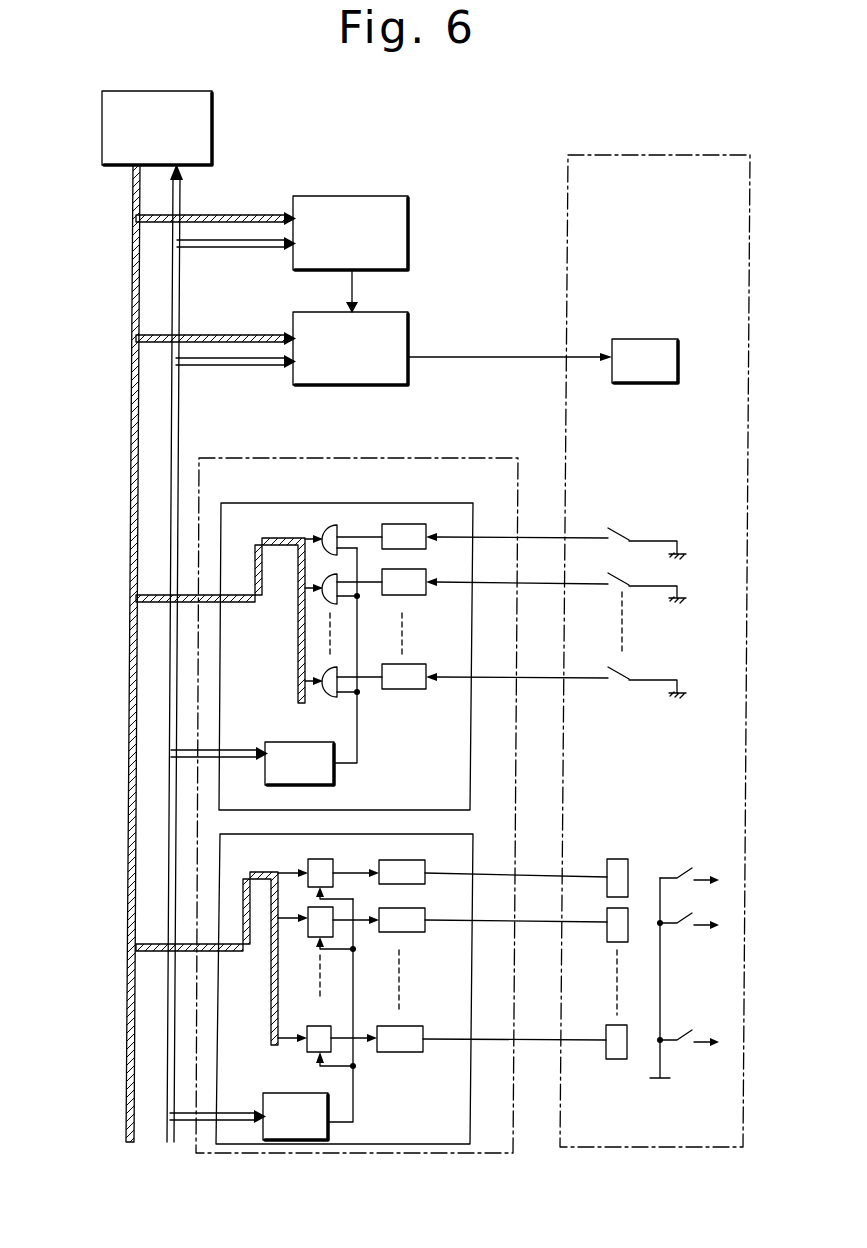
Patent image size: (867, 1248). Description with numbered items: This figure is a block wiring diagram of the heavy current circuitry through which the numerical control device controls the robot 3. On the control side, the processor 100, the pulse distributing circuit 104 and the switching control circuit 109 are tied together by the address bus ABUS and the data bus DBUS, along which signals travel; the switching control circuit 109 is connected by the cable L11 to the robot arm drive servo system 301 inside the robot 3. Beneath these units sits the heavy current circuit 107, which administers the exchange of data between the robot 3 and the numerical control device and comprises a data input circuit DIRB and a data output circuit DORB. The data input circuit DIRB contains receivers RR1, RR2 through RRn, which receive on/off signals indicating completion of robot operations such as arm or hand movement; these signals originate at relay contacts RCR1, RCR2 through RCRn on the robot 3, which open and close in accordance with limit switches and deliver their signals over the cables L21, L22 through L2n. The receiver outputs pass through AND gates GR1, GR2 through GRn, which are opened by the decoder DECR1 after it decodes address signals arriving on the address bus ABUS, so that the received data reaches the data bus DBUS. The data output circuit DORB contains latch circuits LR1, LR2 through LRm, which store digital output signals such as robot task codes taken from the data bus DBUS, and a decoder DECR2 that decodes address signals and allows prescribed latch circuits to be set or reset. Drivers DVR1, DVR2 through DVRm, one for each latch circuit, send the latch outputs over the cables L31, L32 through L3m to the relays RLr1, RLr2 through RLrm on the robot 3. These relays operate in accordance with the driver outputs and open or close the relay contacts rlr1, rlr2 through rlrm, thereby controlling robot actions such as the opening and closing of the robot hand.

The processor 100 is at (214, 146).
The Z-axis pulse distributing circuit 104 is at (404, 197).
The switching control circuit 109 is at (402, 312).
The heavy current circuit 107 is at (494, 458).
The robot 3 is at (647, 157).
The robot arm Z-axis drive servo system 301 is at (637, 340).
The cable L11 is at (494, 357).
The data bus DBUS is at (125, 1025).
The address bus ABUS is at (167, 1065).
The data input circuit DIRB is at (437, 503).
The data output circuit DORB is at (440, 833).
The AND gate GR1 is at (324, 530).
The AND gate GR2 is at (322, 598).
The AND gate GRn is at (327, 697).
The receiver RR1 is at (408, 524).
The receiver RR2 is at (407, 569).
The receiver RRn is at (407, 664).
The cable L21 is at (527, 538).
The cable L22 is at (527, 584).
The cable L2n is at (527, 678).
The relay contact RCR1 is at (647, 529).
The relay contact RCR2 is at (647, 580).
The relay contact RCRn is at (647, 676).
The decoder DECR1 is at (336, 781).
The decoder DECR2 is at (330, 1128).
The latch circuit LR1 is at (318, 859).
The latch circuit LR2 is at (308, 938).
The latch circuit LRm is at (313, 1031).
The driver DVR1 is at (393, 861).
The driver DVR2 is at (392, 908).
The driver DVRm is at (414, 1026).
The cable L31 is at (525, 877).
The cable L32 is at (525, 922).
The cable L3m is at (525, 1040).
The relay RLr1 is at (615, 859).
The relay RLr2 is at (608, 942).
The relay RLrm is at (612, 1060).
The relay contact rlr1 is at (689, 861).
The relay contact rlr2 is at (688, 908).
The relay contact rlrm is at (691, 1023).